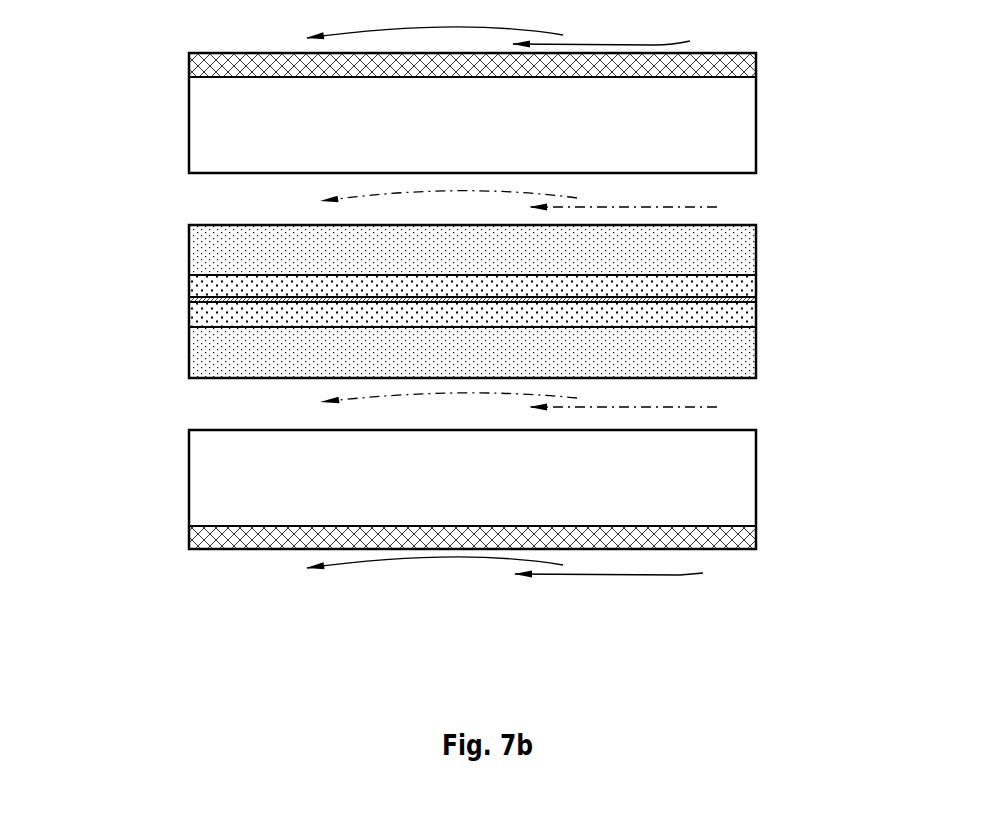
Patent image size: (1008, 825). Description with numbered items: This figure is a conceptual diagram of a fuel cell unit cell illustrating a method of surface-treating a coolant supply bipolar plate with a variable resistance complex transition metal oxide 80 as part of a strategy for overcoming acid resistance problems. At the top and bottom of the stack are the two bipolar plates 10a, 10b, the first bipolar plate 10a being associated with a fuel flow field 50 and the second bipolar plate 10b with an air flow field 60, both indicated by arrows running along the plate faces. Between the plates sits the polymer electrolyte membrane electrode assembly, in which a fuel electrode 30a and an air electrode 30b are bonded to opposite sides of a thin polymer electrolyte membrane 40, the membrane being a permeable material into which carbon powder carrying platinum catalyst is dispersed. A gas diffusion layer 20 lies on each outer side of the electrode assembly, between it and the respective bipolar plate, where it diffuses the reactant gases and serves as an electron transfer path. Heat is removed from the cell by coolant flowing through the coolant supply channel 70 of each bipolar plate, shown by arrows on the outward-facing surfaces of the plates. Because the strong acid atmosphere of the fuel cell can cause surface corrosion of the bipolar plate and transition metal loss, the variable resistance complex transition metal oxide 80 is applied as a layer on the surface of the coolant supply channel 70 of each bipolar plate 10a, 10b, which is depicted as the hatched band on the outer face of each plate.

The bipolar plate 10a is at (740, 121).
The bipolar plate 10b is at (723, 483).
The gas diffusion layer 20 is at (189, 250).
The fuel electrode 30a is at (189, 287).
The air electrode 30b is at (189, 312).
The polymer electrolyte membrane 40 is at (750, 297).
The fuel flow field 50 is at (693, 205).
The air flow field 60 is at (703, 407).
The coolant supply channel 70 is at (680, 42).
The variable resistance complex transition metal oxide layer 80 is at (195, 61).